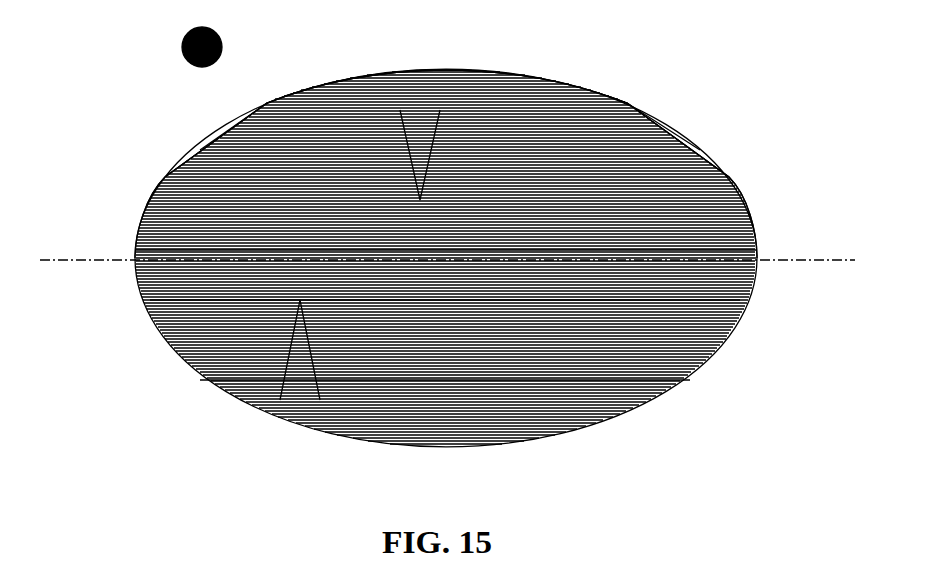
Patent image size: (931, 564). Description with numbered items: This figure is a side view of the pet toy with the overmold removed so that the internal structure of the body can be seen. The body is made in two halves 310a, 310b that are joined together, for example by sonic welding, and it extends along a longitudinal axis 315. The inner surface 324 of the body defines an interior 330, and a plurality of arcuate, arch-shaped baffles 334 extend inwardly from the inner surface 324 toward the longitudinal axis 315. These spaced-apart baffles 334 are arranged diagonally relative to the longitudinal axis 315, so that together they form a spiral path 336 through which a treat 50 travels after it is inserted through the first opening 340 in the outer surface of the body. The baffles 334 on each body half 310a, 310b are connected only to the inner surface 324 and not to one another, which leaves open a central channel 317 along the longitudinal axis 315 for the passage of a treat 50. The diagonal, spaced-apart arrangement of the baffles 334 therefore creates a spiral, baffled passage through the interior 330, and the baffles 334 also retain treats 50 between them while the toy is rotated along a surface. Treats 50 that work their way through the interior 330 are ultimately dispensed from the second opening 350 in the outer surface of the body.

The treat 50 is at (183, 33).
The body half 310a is at (130, 217).
The body half 310b is at (668, 407).
The longitudinal axis 315 is at (108, 257).
The central channel 317 is at (548, 250).
The inner surface 324 is at (157, 330).
The interior 330 is at (658, 340).
The baffles 334 is at (415, 105).
The spiral path 336 is at (217, 145).
The first opening 340 is at (193, 158).
The second opening 350 is at (700, 113).